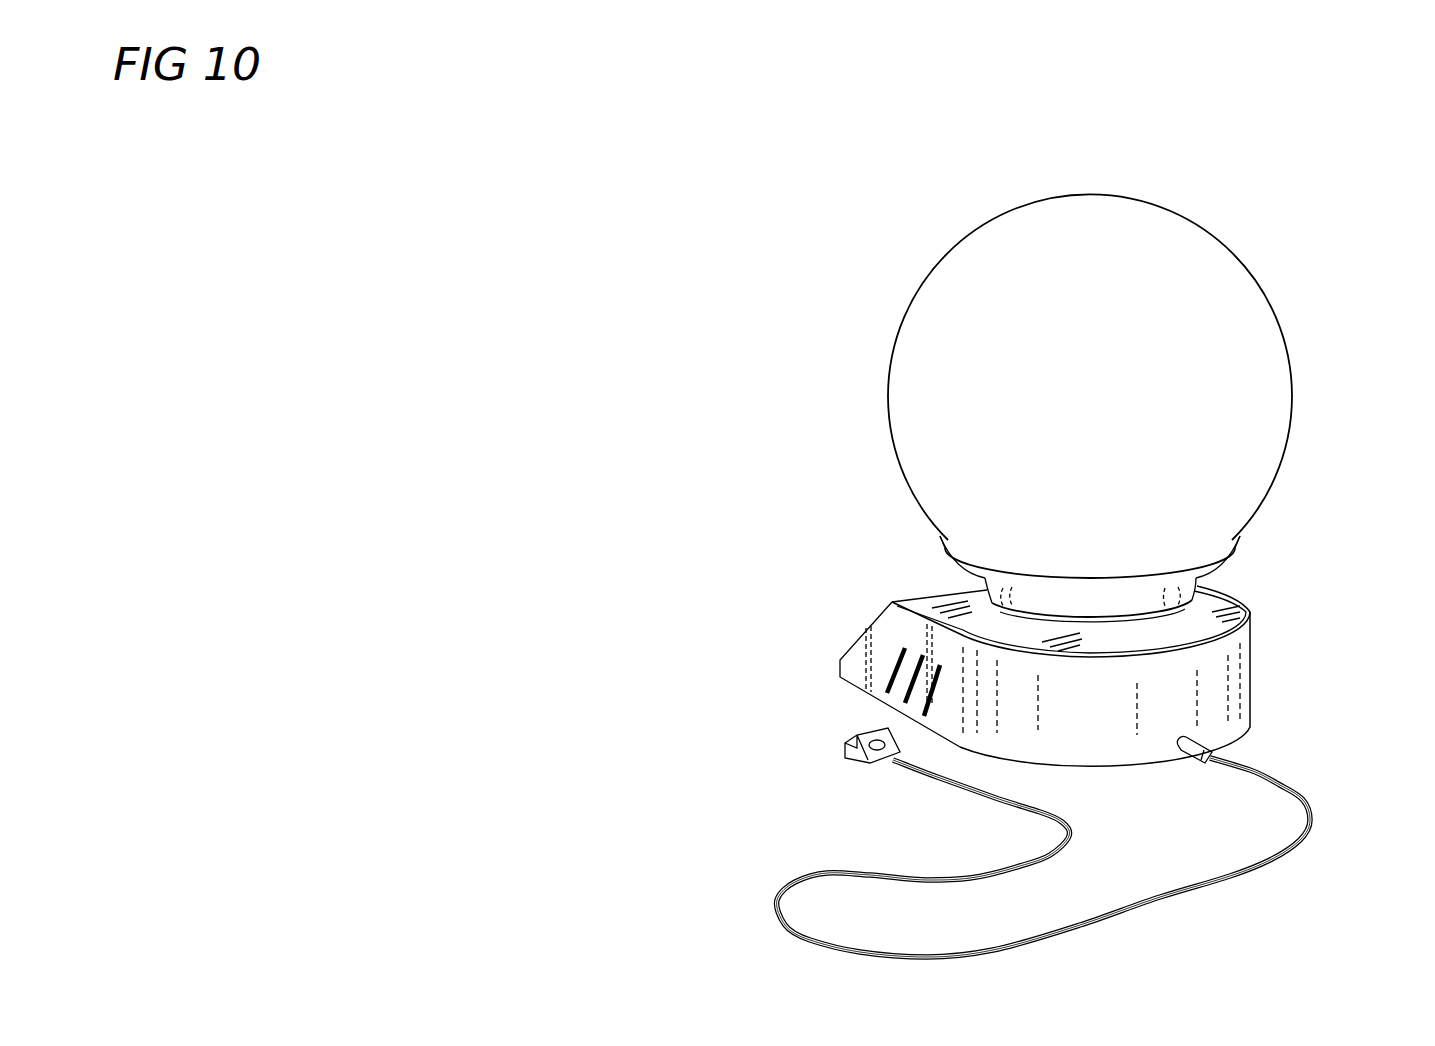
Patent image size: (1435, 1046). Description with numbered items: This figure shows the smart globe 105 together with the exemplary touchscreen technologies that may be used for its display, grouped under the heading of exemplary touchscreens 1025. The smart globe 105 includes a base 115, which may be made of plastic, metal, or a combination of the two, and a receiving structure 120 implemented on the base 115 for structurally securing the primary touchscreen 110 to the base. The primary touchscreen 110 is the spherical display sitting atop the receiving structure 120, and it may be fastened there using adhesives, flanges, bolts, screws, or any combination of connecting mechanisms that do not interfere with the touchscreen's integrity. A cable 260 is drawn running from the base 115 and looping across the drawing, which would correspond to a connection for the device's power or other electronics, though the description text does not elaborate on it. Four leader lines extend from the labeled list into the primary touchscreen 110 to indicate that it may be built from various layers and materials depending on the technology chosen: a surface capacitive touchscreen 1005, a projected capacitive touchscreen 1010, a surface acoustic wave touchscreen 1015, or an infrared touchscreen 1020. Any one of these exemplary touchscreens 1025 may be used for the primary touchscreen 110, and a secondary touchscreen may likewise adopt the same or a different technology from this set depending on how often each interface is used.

The smart globe 105 is at (1317, 224).
The primary touchscreen 110 is at (1292, 433).
The base 115 is at (891, 602).
The receiving structure 120 is at (957, 563).
The power cable 260 is at (1307, 817).
The surface capacitive touchscreen 1005 is at (1008, 250).
The projected capacitive touchscreen 1010 is at (1008, 297).
The surface acoustic wave touchscreen 1015 is at (1008, 342).
The infrared touchscreen 1020 is at (1012, 391).
The exemplary touchscreens 1025 is at (698, 67).